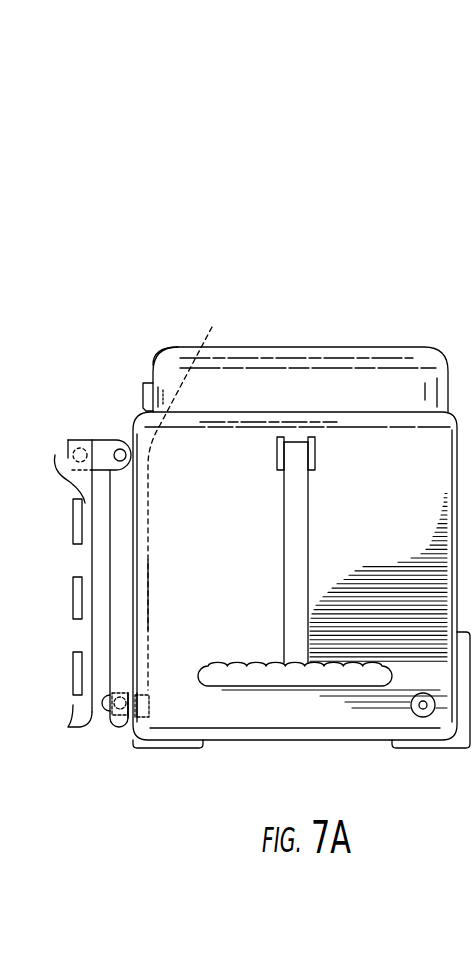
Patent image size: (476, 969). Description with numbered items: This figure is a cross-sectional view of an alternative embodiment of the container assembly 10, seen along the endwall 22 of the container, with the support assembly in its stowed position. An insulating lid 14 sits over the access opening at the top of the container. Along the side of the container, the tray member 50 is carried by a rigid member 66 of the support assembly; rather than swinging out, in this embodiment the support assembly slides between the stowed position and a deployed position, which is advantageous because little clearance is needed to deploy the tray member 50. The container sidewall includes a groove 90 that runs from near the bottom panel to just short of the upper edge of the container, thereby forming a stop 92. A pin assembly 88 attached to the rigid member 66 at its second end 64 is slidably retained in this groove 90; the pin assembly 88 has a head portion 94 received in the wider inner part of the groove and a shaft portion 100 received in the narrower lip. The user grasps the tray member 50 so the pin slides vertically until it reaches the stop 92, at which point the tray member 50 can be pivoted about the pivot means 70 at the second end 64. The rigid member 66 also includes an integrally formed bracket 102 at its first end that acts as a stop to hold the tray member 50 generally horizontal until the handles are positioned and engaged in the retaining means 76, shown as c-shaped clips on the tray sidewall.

The container assembly 10 is at (333, 297).
The insulating lid 14 is at (312, 403).
The endwall 22 is at (251, 531).
The tray member 50 is at (55, 455).
The second end 64 is at (120, 729).
The rigid member 66 is at (115, 567).
The pivot means 70 is at (102, 452).
The retaining means 76 is at (68, 609).
The pin assembly 88 is at (142, 692).
The groove 90 is at (146, 598).
The stop 92 is at (185, 494).
The head portion 94 is at (142, 702).
The shaft portion 100 is at (128, 727).
The bracket 102 is at (158, 362).